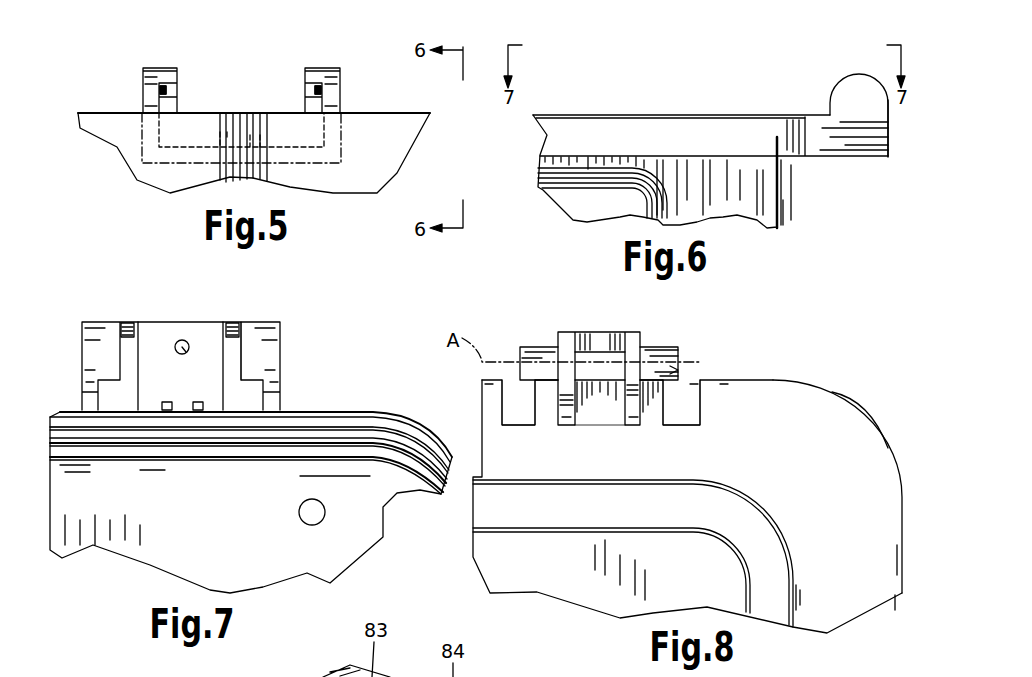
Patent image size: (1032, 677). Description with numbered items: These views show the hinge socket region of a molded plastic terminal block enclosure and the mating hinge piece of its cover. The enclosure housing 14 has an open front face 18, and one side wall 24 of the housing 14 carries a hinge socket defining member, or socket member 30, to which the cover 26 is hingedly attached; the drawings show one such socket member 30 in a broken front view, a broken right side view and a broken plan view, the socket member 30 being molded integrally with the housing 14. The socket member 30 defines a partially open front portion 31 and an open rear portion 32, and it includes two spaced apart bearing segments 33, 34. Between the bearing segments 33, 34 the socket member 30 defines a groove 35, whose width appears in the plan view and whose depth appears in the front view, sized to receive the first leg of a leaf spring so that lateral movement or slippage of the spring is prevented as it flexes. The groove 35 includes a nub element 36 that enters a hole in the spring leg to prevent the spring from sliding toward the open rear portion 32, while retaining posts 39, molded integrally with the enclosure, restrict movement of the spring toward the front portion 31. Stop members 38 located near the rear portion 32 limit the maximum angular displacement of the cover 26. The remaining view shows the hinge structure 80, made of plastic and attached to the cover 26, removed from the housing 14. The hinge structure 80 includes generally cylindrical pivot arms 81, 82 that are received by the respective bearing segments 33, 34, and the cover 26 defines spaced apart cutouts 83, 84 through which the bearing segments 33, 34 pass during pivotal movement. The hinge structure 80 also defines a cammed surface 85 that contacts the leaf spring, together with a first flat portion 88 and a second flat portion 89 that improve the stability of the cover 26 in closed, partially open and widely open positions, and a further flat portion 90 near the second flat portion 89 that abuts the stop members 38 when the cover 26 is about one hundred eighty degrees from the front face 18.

In FIG. 6, the housing 14 is at (743, 190).
In FIG. 7, the housing 14 is at (373, 412).
In FIG. 5, the front face 18 is at (123, 113).
In FIG. 6, the front face 18 is at (572, 115).
In FIG. 7, the front face 18 is at (397, 442).
In FIG. 5, the side wall 24 is at (390, 142).
In FIG. 6, the side wall 24 is at (777, 180).
In FIG. 7, the side wall 24 is at (297, 455).
In FIG. 8, the cover 26 is at (830, 417).
In FIG. 5, the socket member 30 is at (247, 126).
In FIG. 6, the socket member 30 is at (839, 161).
In FIG. 7, the socket member 30 is at (193, 383).
In FIG. 7, the front portion 31 is at (143, 410).
In FIG. 6, the rear portion 32 is at (887, 128).
In FIG. 7, the rear portion 32 is at (185, 322).
In FIG. 5, the bearing segment 33 is at (178, 76).
In FIG. 7, the bearing segment 33 is at (92, 368).
In FIG. 5, the bearing segment 34 is at (340, 75).
In FIG. 6, the bearing segment 34 is at (860, 97).
In FIG. 7, the bearing segment 34 is at (263, 360).
In FIG. 5, the groove 35 is at (280, 133).
In FIG. 7, the groove 35 is at (215, 350).
In FIG. 7, the nub element 36 is at (180, 344).
In FIG. 5, the stop member 38 is at (183, 115).
In FIG. 7, the stop member 38 is at (127, 325).
In FIG. 5, the retaining post 39 is at (222, 140).
In FIG. 7, the retaining post 39 is at (168, 410).
In FIG. 8, the hinge structure 80 is at (604, 401).
In FIG. 8, the pivot arm 81 is at (527, 358).
In FIG. 8, the pivot arm 82 is at (670, 368).
In FIG. 8, the cutout 83 is at (503, 397).
In FIG. 8, the cutout 84 is at (687, 392).
In FIG. 8, the cammed surface 85 is at (572, 335).
In FIG. 8, the first flat portion 88 is at (605, 333).
In FIG. 8, the second flat portion 89 is at (623, 405).
In FIG. 8, the flat portion 90 is at (548, 387).